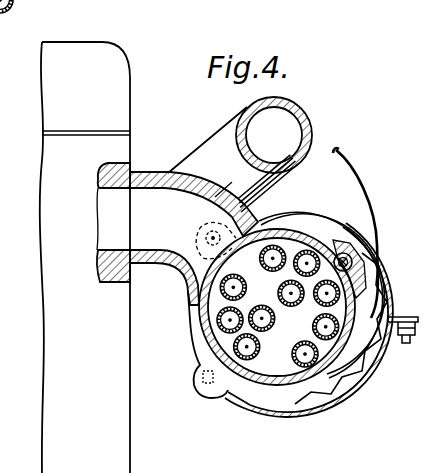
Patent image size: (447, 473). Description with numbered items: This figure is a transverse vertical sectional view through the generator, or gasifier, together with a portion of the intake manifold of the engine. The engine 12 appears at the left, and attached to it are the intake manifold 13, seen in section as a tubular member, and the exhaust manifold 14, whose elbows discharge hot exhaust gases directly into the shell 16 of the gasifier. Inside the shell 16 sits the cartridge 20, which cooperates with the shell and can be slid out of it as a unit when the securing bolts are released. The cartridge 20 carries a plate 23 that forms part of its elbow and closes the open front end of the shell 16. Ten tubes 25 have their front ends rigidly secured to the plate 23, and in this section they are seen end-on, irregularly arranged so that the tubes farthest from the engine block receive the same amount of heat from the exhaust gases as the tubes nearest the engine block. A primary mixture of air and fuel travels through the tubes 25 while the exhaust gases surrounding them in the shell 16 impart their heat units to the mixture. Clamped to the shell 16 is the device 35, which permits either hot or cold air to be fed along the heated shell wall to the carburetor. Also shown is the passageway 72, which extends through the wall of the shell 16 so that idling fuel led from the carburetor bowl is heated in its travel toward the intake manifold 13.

The engine 12 is at (107, 112).
The intake manifold 13 is at (303, 113).
The exhaust manifold 14 is at (258, 203).
The shell 16 is at (315, 222).
The cartridge 20 is at (230, 400).
The plate 23 is at (192, 323).
The tubes 25 is at (280, 269).
The device 35 is at (367, 317).
The passageway 72 is at (378, 260).